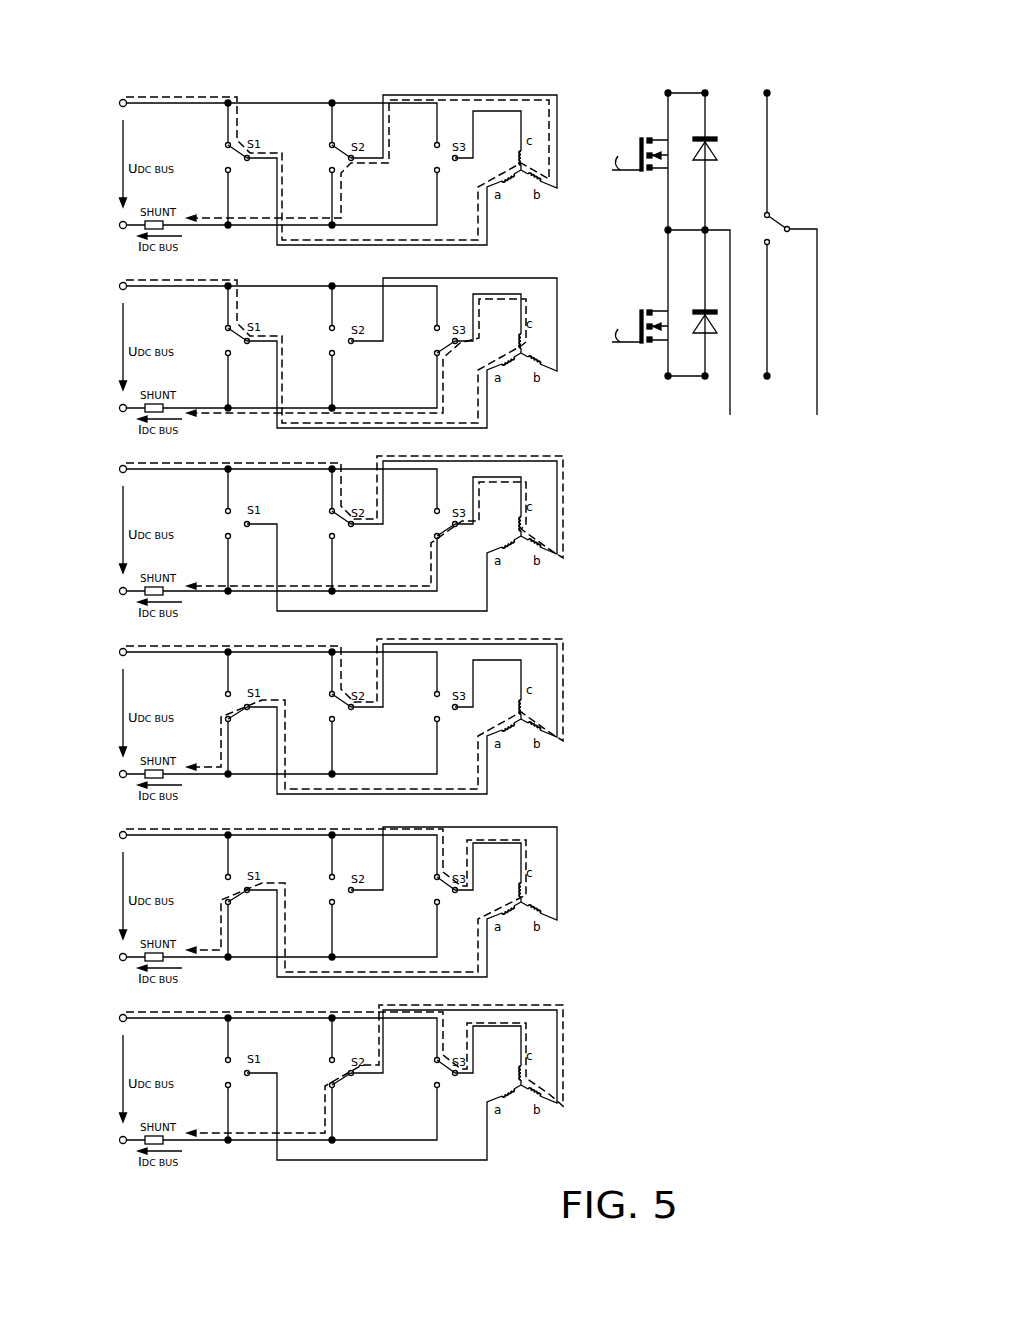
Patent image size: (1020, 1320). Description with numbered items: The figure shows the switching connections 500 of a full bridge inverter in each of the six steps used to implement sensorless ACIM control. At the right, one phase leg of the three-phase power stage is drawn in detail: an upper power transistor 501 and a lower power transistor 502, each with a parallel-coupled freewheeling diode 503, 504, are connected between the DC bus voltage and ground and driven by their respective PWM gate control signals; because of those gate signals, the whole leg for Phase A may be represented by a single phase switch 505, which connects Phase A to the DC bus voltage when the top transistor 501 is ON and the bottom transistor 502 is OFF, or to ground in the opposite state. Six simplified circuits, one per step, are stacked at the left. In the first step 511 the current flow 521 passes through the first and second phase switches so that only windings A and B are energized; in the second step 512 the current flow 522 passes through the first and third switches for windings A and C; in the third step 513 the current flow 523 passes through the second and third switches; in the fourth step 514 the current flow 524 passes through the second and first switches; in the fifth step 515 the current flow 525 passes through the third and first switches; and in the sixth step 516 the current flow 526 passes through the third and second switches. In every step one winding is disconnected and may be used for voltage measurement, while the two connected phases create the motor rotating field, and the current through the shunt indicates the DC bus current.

The circuit arrangement for driving the three-phase motor in six steps 500 is at (119, 58).
The upper power transistor 501 is at (652, 173).
The lower power transistor 502 is at (652, 345).
The freewheeling diode 503 is at (717, 158).
The freewheeling diode 504 is at (696, 309).
The switch S1 505 is at (788, 233).
The first step switching configuration 511 is at (300, 174).
The second step switching configuration 512 is at (299, 357).
The third step switching configuration 513 is at (300, 538).
The fourth step switching configuration 514 is at (300, 721).
The fifth step switching configuration 515 is at (298, 906).
The sixth step switching configuration 516 is at (300, 1087).
The current flow 521 is at (337, 168).
The current flow 522 is at (326, 351).
The current flow 523 is at (344, 522).
The current flow 524 is at (344, 714).
The current flow 525 is at (326, 900).
The current flow 526 is at (344, 1070).